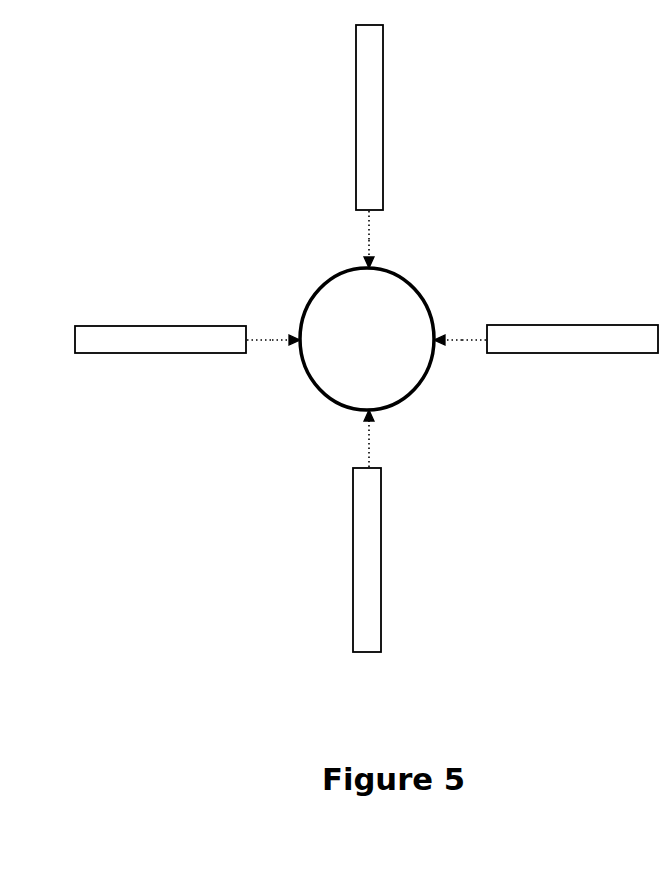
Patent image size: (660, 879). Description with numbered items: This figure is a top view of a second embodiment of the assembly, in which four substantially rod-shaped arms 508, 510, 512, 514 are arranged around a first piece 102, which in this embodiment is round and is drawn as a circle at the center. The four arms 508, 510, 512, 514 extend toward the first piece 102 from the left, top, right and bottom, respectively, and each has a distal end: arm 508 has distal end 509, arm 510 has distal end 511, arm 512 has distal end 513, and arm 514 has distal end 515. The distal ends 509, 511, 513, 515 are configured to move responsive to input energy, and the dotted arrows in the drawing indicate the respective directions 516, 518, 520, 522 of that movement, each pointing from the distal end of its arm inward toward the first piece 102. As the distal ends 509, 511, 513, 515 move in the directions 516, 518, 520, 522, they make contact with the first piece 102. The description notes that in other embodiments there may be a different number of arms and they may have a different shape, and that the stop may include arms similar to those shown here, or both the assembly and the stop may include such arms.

The first piece 102 is at (367, 339).
The arm 508 is at (160, 339).
The arm 510 is at (369, 117).
The arm 512 is at (572, 339).
The arm 514 is at (367, 560).
The distal end 509 is at (250, 345).
The distal end 511 is at (367, 211).
The distal end 513 is at (486, 335).
The distal end 515 is at (368, 466).
The direction 516 is at (270, 331).
The direction 518 is at (375, 236).
The direction 520 is at (470, 344).
The direction 522 is at (365, 445).